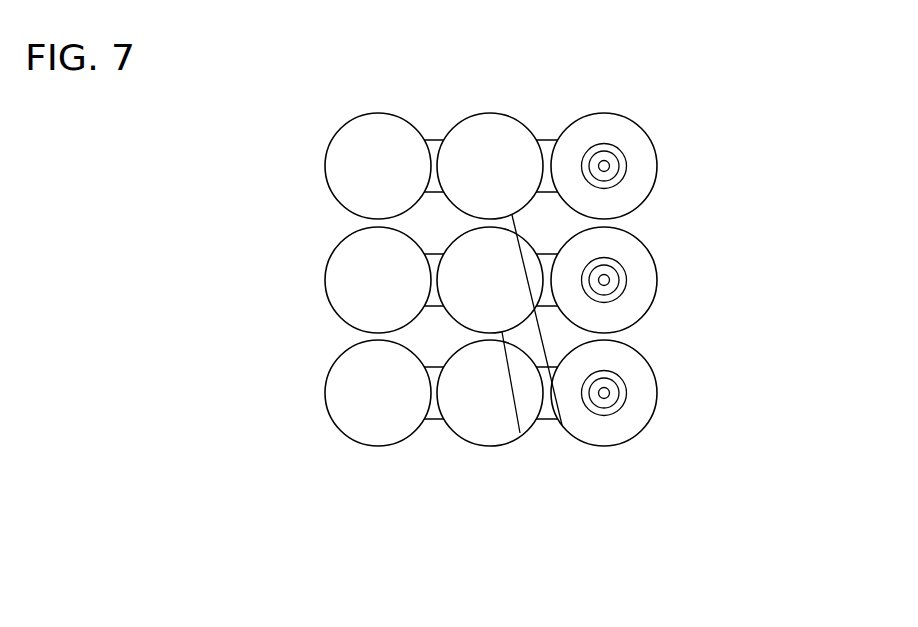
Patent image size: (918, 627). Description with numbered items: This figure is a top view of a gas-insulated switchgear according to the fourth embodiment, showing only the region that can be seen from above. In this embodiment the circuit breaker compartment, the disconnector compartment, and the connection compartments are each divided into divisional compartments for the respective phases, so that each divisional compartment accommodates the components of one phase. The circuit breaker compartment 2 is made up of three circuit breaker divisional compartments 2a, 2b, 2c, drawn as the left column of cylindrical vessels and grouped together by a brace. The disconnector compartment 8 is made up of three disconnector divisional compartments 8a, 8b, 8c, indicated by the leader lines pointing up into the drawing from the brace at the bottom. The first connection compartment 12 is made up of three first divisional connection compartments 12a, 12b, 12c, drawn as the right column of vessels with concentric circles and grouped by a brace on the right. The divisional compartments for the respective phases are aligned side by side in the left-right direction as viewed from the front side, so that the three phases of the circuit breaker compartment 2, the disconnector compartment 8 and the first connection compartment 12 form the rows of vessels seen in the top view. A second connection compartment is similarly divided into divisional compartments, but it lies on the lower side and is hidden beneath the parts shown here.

The circuit breaker compartment 2 is at (215, 225).
The circuit breaker divisional compartment 2a is at (324, 172).
The circuit breaker divisional compartment 2b is at (325, 273).
The circuit breaker divisional compartment 2c is at (337, 357).
The first connection compartment 12 is at (783, 218).
The first divisional connection compartment 12a is at (655, 177).
The first divisional connection compartment 12b is at (657, 273).
The first divisional connection compartment 12c is at (648, 358).
The disconnector compartment 8 is at (573, 515).
The disconnector divisional compartment 8a is at (562, 425).
The disconnector divisional compartment 8b is at (520, 433).
The disconnector divisional compartment 8c is at (470, 443).